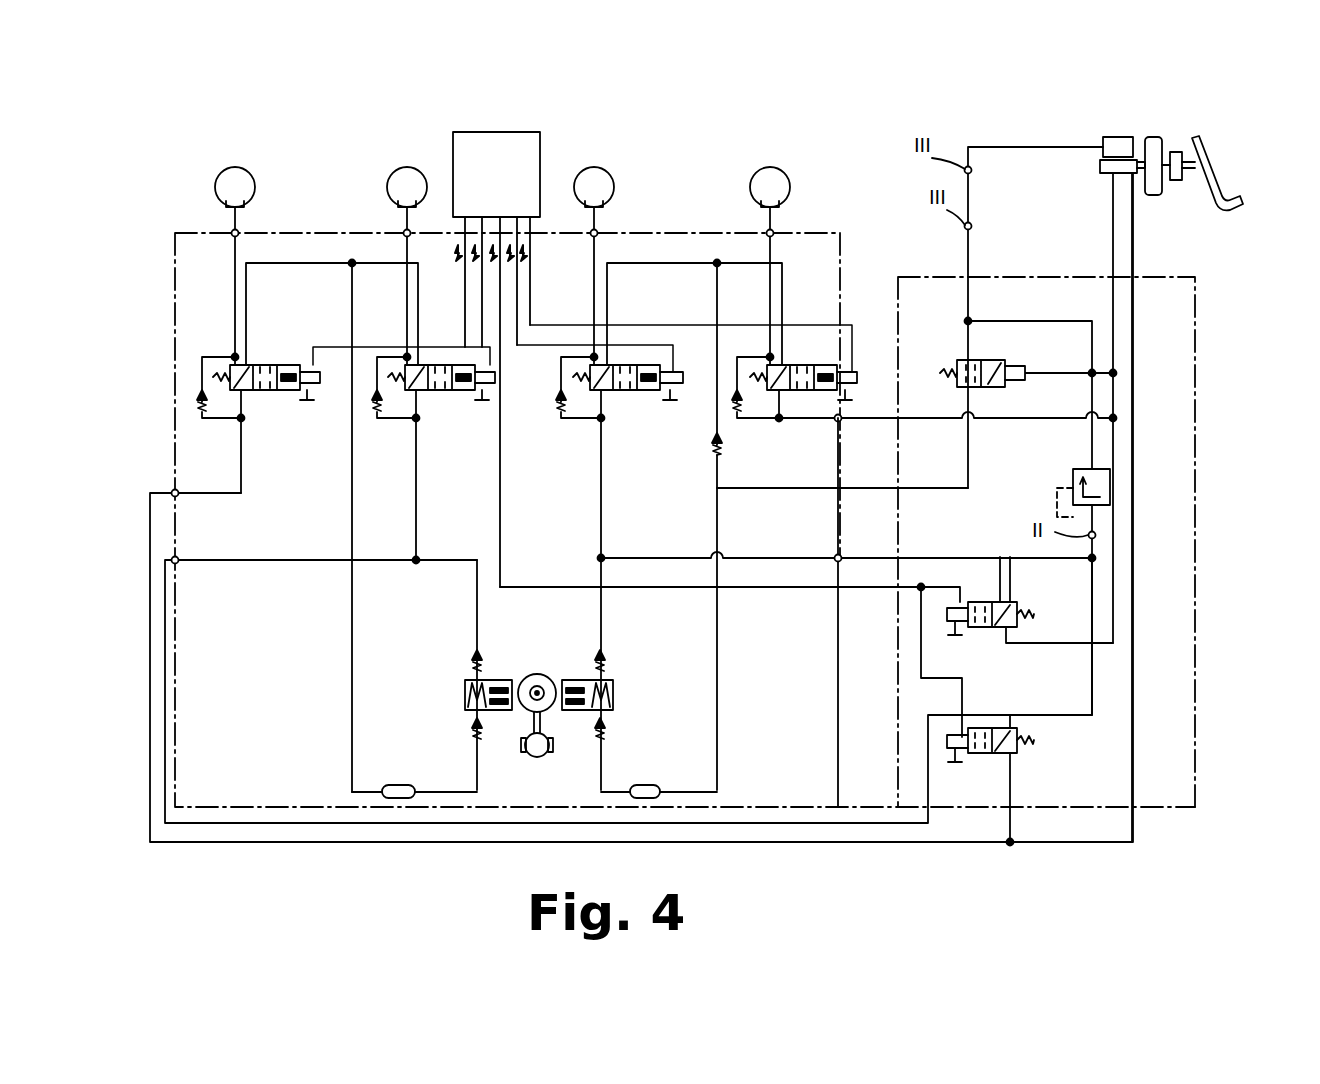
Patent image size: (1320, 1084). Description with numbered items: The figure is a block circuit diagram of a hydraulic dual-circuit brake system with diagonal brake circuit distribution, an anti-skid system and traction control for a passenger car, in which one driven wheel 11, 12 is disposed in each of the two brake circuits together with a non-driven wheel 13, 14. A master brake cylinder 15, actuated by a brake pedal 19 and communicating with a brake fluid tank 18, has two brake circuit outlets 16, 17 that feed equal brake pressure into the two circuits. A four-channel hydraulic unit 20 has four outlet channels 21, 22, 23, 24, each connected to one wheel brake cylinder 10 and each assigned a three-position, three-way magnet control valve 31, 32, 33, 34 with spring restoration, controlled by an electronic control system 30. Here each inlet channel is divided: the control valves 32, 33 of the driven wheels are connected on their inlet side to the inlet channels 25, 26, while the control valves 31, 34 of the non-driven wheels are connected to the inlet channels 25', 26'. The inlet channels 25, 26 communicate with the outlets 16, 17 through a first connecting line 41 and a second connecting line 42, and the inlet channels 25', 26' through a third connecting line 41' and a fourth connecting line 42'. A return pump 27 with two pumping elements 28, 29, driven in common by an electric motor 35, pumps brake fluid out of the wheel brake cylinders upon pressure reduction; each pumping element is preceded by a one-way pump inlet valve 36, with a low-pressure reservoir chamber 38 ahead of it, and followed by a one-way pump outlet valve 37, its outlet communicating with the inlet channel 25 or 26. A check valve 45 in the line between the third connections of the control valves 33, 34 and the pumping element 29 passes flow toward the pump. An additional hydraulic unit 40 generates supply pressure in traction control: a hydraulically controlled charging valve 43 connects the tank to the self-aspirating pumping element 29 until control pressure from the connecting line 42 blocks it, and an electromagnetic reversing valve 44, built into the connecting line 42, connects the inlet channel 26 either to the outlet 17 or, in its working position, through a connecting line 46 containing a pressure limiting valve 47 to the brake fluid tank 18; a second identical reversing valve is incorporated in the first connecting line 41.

The wheel brake cylinder 10 is at (226, 205).
The driven wheel 11 is at (596, 182).
The driven wheel 12 is at (407, 182).
The non-driven wheel 13 is at (235, 182).
The non-driven wheel 14 is at (773, 182).
The master brake cylinder 15 is at (1100, 165).
The brake circuit outlet 16 is at (1137, 176).
The brake circuit outlet 17 is at (1107, 174).
The brake fluid tank 18 is at (1110, 137).
The brake pedal 19 is at (1213, 172).
The four-channel hydraulic unit 20 is at (843, 250).
The outlet channel 21 is at (238, 231).
The outlet channel 22 is at (410, 232).
The outlet channel 23 is at (597, 231).
The outlet channel 24 is at (773, 231).
The inlet channel 25 is at (584, 652).
The inlet channel 25' is at (620, 507).
The inlet channel 26 is at (847, 612).
The inlet channel 26' is at (946, 439).
The return pump 27 is at (537, 676).
The pumping element 28 is at (465, 688).
The pumping element 29 is at (614, 690).
The electronic control system 30 is at (512, 195).
The control valve 31 is at (274, 392).
The control valve 32 is at (449, 392).
The control valve 33 is at (628, 392).
The control valve 34 is at (812, 392).
The electric motor 35 is at (545, 757).
The pump inlet valve 36 is at (474, 735).
The pump outlet valve 37 is at (481, 668).
The low-pressure reservoir chamber 38 is at (398, 785).
The additional hydraulic unit 40 is at (1196, 447).
The first connecting line 41 is at (1098, 613).
The third connecting line 41' is at (846, 866).
The second connecting line 42 is at (1151, 486).
The fourth connecting line 42' is at (1011, 394).
The charging valve 43 is at (990, 388).
The reversing valve 44 is at (985, 628).
The check valve 45 is at (712, 440).
The connecting line 46 is at (1055, 558).
The pressure limiting valve 47 is at (1073, 477).